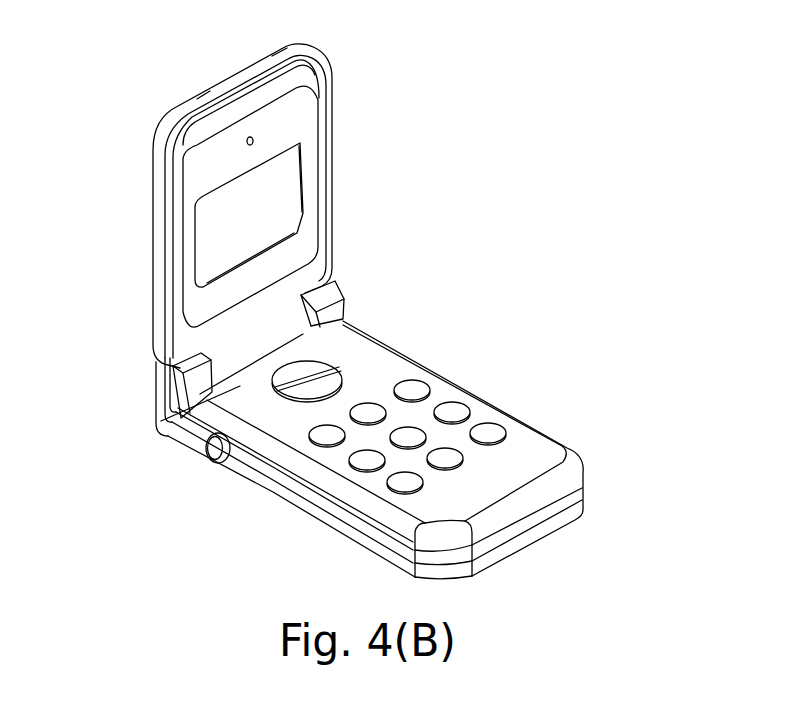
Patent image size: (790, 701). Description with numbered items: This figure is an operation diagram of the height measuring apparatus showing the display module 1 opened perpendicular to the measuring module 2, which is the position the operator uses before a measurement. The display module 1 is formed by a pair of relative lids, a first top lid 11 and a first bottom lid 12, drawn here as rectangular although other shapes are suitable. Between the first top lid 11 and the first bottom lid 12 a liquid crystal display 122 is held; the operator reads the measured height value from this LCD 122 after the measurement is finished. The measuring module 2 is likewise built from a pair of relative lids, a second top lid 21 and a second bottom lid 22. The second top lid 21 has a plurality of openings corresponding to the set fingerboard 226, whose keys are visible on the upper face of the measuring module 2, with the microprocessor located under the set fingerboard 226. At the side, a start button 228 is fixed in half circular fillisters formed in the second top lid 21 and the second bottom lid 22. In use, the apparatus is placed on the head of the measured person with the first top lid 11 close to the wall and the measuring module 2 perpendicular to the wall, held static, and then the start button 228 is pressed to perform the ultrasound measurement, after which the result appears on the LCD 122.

The display module 1 is at (161, 101).
The first top lid 11 is at (250, 68).
The first bottom lid 12 is at (315, 78).
The liquid crystal display (LCD) 122 is at (283, 213).
The measuring module 2 is at (502, 380).
The second top lid 21 is at (368, 350).
The second bottom lid 22 is at (537, 530).
The set fingerboard 226 is at (483, 432).
The start button 228 is at (210, 450).